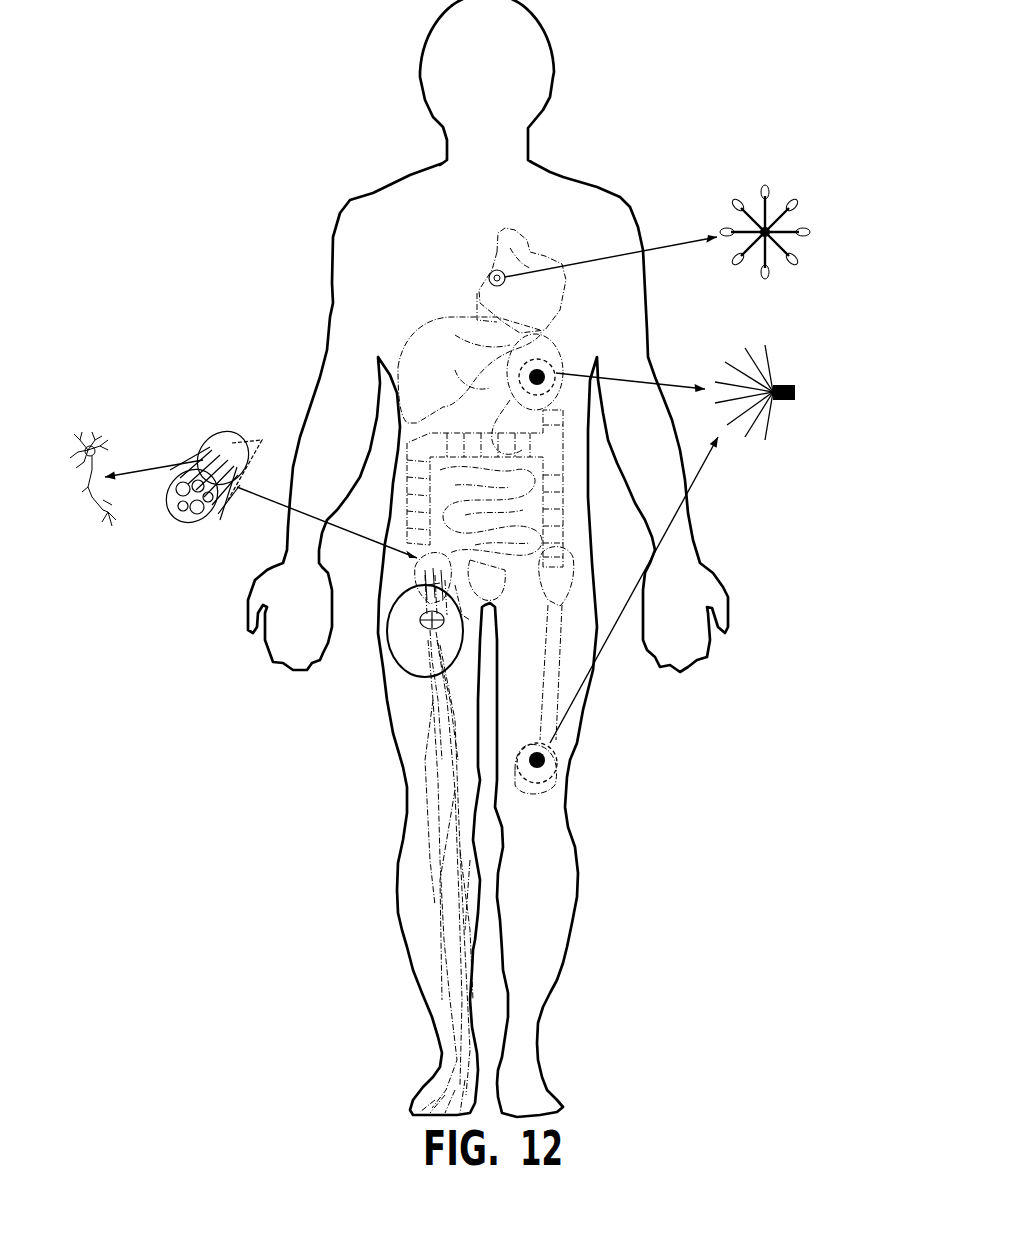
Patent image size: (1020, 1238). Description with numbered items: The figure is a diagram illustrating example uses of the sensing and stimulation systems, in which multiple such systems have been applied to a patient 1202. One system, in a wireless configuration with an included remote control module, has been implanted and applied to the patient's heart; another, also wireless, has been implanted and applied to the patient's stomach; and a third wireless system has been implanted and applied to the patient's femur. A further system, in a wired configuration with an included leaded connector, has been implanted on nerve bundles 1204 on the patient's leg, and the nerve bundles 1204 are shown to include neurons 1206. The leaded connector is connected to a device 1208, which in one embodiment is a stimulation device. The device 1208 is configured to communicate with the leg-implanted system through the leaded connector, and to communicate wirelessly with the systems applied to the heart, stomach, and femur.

The patient 1202 is at (410, 174).
The device 1208 is at (433, 630).
The nerve bundles 1204 is at (231, 445).
The neurons 1206 is at (87, 440).